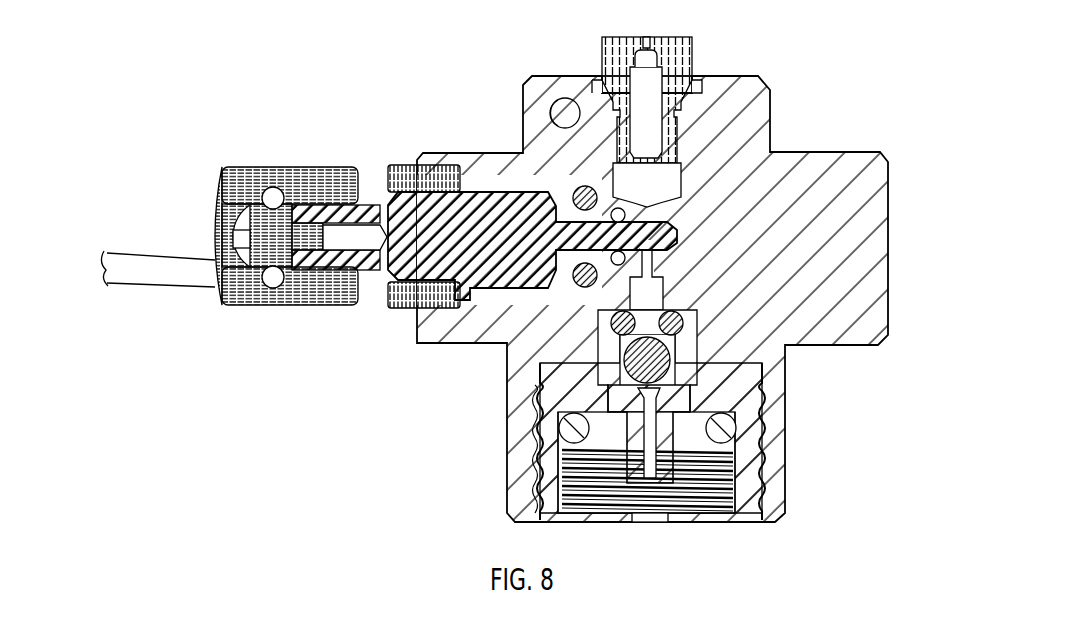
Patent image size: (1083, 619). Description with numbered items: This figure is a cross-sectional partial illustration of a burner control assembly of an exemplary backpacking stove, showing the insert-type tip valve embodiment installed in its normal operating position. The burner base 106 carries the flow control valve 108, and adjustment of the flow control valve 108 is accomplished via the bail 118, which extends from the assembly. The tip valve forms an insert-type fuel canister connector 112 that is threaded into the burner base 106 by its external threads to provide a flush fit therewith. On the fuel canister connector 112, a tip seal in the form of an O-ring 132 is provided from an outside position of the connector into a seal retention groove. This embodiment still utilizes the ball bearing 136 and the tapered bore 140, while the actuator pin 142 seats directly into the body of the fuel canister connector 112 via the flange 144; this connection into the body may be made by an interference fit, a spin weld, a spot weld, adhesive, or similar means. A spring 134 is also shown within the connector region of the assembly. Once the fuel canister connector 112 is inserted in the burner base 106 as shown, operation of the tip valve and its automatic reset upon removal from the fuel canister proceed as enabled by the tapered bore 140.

The burner base 106 is at (847, 165).
The flow control valve 108 is at (382, 188).
The fuel canister connector 112 is at (784, 412).
The bail 118 is at (153, 270).
The O-ring 132 is at (636, 323).
The spring 134 is at (736, 432).
The ball bearing 136 is at (660, 354).
The tapered bore 140 is at (625, 372).
The actuator pin 142 is at (787, 376).
The flange 144 is at (617, 407).